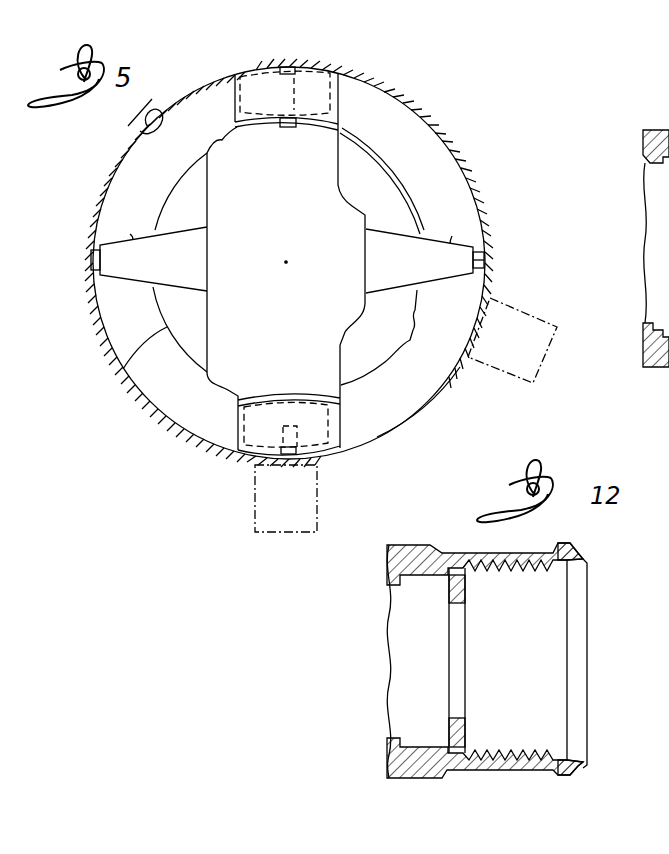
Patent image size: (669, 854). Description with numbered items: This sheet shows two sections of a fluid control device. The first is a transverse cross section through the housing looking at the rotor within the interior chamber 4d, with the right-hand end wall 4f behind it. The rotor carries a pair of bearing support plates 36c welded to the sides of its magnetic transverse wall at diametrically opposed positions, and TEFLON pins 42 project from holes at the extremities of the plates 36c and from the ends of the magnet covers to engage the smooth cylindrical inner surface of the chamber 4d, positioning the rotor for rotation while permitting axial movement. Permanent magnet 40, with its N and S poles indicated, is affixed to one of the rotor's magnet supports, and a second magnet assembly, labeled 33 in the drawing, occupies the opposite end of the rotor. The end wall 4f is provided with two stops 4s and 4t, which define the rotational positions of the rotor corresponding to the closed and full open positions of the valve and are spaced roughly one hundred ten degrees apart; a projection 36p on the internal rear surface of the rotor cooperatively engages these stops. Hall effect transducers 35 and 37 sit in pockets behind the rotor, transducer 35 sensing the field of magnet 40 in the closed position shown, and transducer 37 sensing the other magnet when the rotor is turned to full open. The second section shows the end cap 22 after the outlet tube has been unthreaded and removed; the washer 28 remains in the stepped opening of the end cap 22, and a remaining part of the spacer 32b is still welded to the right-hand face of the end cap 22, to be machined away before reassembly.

In FIG. 5, the permanent magnet 33 is at (352, 62).
In FIG. 5, the TEFLON pin 42 is at (288, 66).
In FIG. 5, the stop 4s is at (265, 126).
In FIG. 5, the projection 36p is at (342, 130).
In FIG. 5, the interior chamber 4d is at (133, 117).
In FIG. 5, the bearing support plate 36c is at (133, 239).
In FIG. 5, the stop 4t is at (407, 330).
In FIG. 5, the right-hand end wall 4f is at (123, 369).
In FIG. 5, the permanent magnet 40 is at (242, 432).
In FIG. 5, the Hall effect transducer 37 is at (527, 290).
In FIG. 5, the Hall effect transducer 35 is at (253, 488).
In FIG. 12, the end cap 22 is at (458, 527).
In FIG. 12, the part of the spacer 32b is at (581, 557).
In FIG. 12, the washer 28 is at (448, 594).